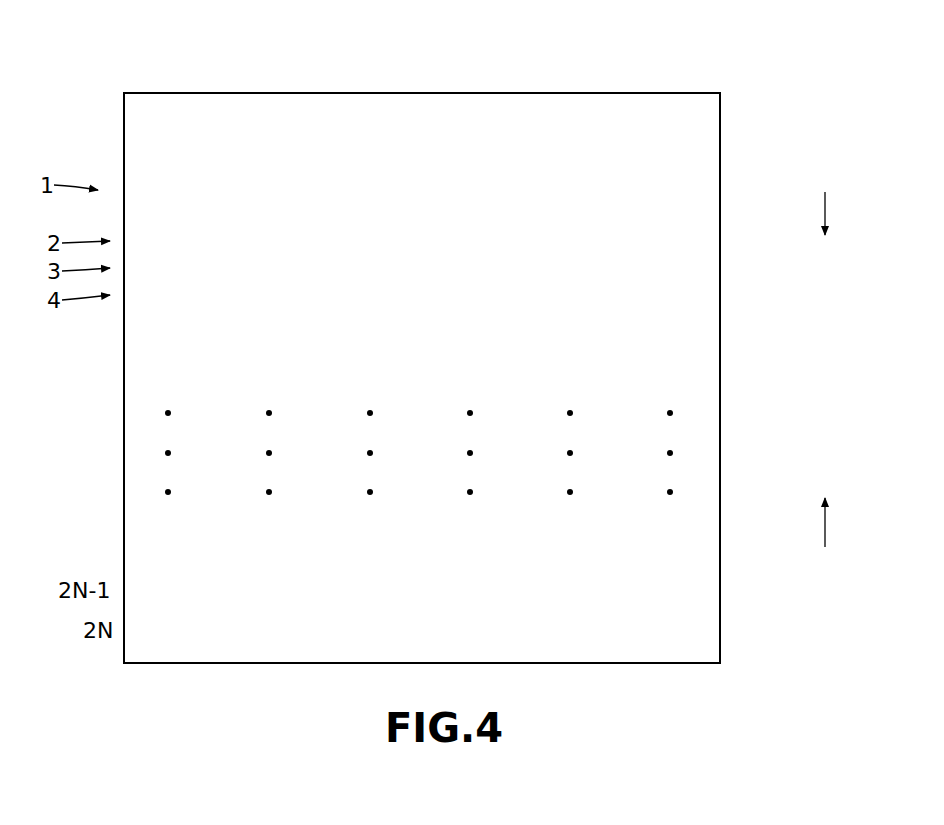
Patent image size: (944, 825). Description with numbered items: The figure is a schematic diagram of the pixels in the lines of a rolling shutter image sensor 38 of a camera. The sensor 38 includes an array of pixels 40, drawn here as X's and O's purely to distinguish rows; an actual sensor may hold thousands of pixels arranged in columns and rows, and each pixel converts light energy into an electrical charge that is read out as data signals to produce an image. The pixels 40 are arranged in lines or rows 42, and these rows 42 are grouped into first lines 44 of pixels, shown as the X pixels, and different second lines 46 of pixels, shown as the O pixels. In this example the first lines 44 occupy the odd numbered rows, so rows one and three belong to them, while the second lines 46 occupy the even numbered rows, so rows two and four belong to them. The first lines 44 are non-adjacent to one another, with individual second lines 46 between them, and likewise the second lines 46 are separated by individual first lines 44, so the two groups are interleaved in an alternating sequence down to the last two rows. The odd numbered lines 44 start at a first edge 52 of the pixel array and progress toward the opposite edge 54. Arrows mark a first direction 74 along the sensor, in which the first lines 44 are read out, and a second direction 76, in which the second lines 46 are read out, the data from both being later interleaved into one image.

The sensor 38 is at (740, 64).
The first edge of pixel array 52 is at (210, 93).
The opposite edge of pixel array 54 is at (587, 663).
The array of pixels 40 is at (680, 220).
The rows 42 is at (708, 268).
The first lines of pixels 44 is at (132, 186).
The second lines of pixels 46 is at (130, 225).
The first direction 74 is at (826, 210).
The second direction 76 is at (826, 520).